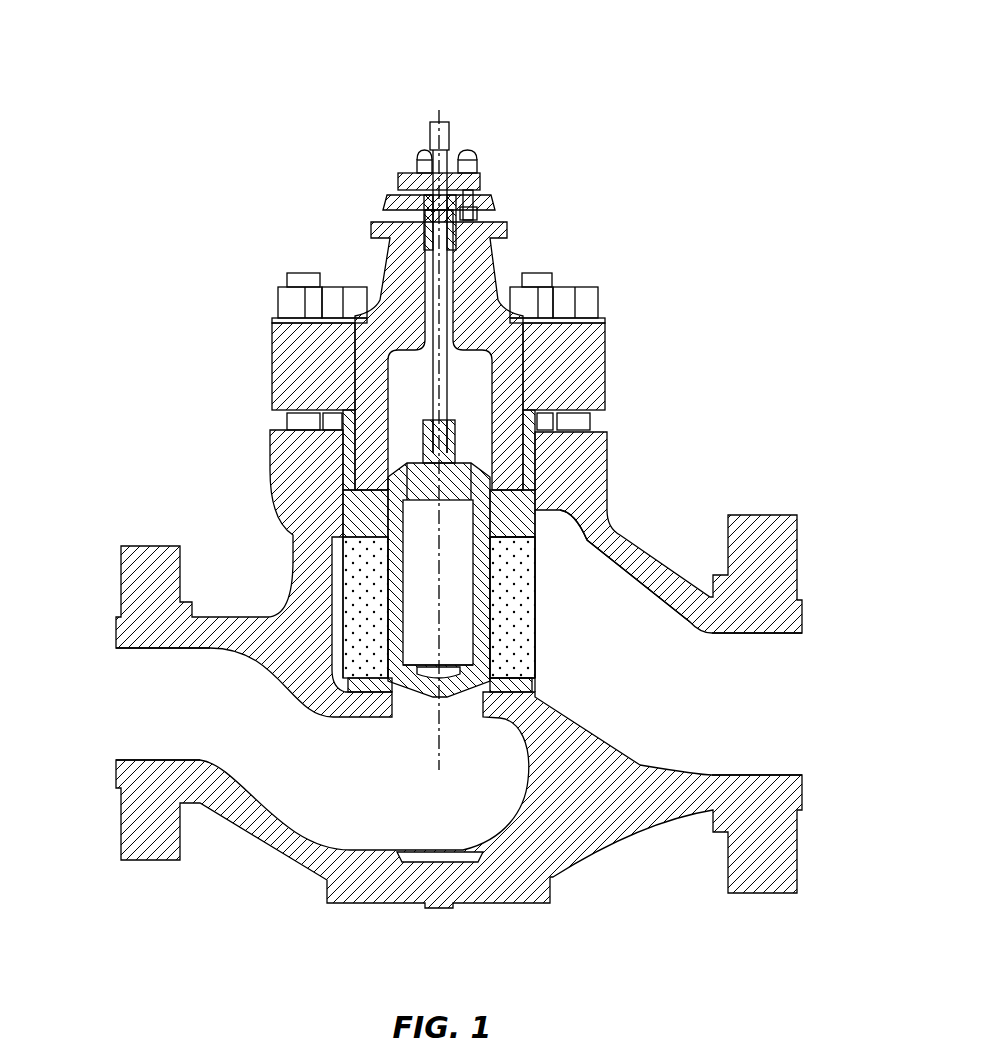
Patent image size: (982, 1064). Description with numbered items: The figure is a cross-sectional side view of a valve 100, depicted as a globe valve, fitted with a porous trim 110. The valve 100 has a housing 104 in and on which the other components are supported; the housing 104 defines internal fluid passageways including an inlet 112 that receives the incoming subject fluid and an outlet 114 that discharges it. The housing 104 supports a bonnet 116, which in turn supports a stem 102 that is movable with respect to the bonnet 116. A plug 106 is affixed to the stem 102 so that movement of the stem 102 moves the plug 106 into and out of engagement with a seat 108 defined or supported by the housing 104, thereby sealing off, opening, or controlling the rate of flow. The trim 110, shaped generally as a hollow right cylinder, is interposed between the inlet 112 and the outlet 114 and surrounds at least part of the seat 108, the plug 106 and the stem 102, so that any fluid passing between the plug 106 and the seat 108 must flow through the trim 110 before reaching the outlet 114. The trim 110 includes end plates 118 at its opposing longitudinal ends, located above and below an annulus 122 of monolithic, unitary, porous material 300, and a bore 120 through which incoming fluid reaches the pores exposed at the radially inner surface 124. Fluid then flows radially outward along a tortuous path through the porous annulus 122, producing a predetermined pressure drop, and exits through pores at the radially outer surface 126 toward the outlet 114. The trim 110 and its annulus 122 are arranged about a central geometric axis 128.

The valve 100 is at (627, 90).
The stem 102 is at (500, 296).
The housing 104 is at (295, 553).
The plug 106 is at (592, 430).
The seat 108 is at (555, 510).
The trim 110 is at (521, 600).
The inlet 112 is at (148, 689).
The outlet 114 is at (774, 686).
The bonnet 116 is at (400, 262).
The end plates 118 is at (362, 500).
The bore 120 is at (425, 598).
The annulus 122 is at (363, 567).
The radially inner surface 124 is at (497, 647).
The radially outer surface 126 is at (542, 635).
The central geometric axis 128 is at (437, 758).
The monolithic, unitary, porous material 300 is at (521, 568).